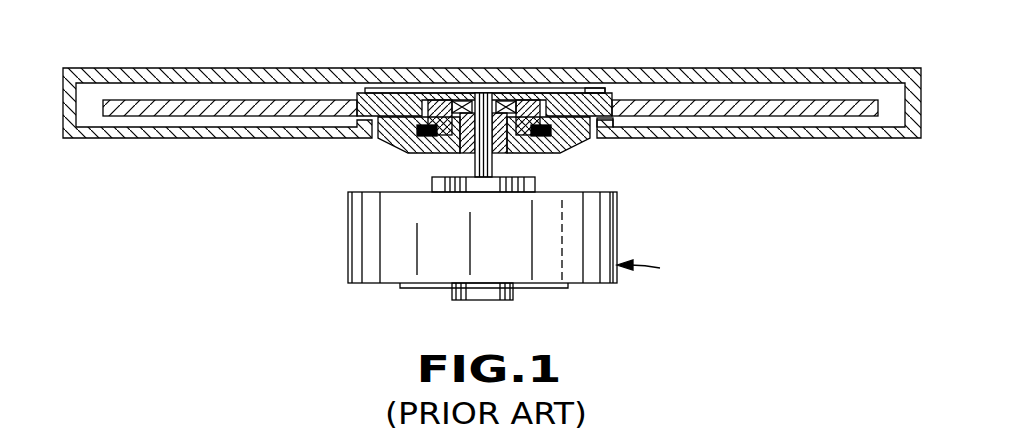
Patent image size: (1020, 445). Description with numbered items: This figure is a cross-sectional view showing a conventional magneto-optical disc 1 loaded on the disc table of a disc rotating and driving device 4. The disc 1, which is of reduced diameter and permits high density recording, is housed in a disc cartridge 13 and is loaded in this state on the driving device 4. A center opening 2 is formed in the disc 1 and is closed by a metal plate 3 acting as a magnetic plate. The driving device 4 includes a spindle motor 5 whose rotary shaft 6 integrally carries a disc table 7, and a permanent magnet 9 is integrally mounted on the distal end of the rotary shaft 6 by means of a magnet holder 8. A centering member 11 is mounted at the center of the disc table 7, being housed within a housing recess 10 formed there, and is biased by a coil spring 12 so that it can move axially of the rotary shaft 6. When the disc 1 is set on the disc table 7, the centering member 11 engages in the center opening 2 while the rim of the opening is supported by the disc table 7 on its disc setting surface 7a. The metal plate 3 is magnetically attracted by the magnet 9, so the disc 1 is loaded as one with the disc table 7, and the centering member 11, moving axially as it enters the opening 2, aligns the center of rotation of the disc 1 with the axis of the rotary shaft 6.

The magneto-optical disc 1 is at (764, 105).
The center opening 2 is at (538, 93).
The metal plate 3 is at (431, 88).
The disc rotating and driving device 4 is at (678, 280).
The spindle motor 5 is at (368, 240).
The rotary shaft 6 is at (483, 168).
The disc table 7 is at (556, 150).
The disc setting surface 7a is at (610, 102).
The magnet holder 8 is at (525, 100).
The permanent magnet 9 is at (497, 92).
The housing recess 10 is at (397, 143).
The centering member 11 is at (595, 90).
The coil spring 12 is at (534, 142).
The disc cartridge 13 is at (883, 68).